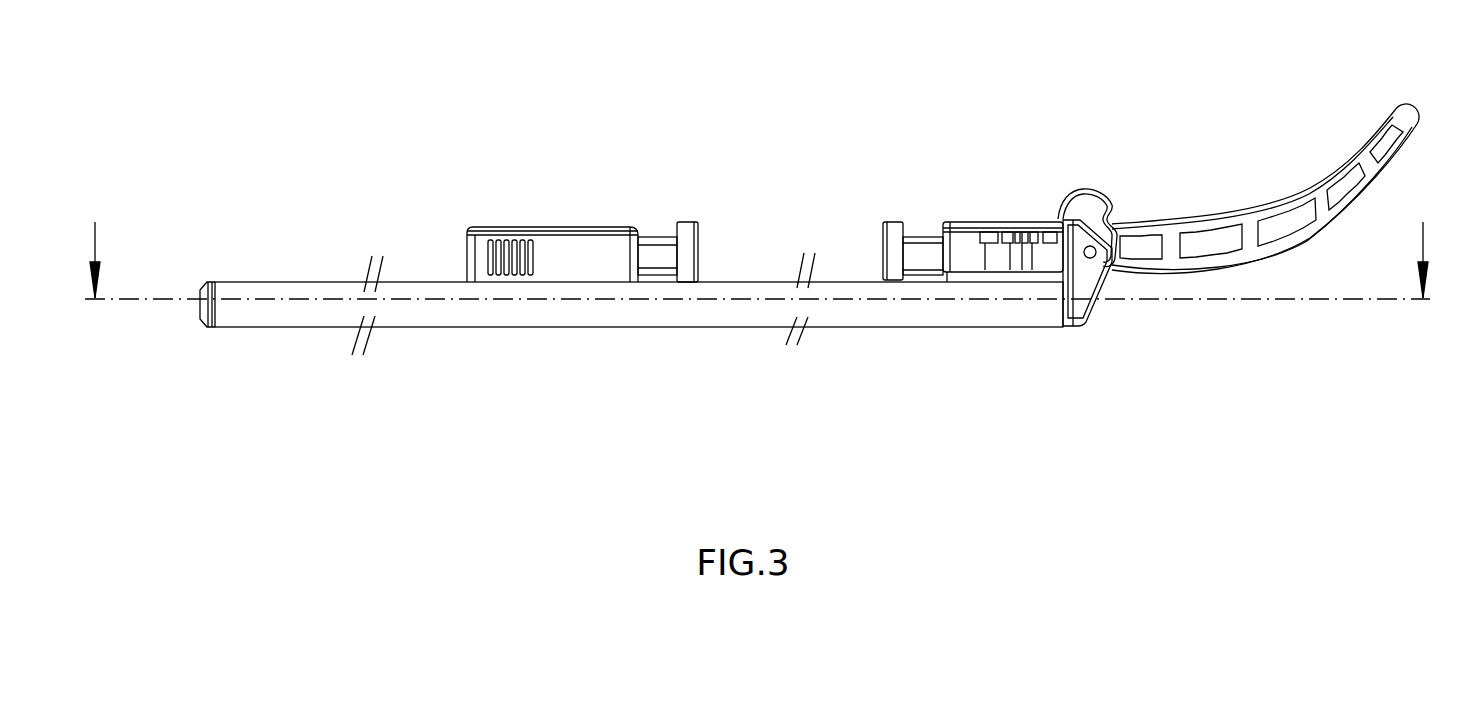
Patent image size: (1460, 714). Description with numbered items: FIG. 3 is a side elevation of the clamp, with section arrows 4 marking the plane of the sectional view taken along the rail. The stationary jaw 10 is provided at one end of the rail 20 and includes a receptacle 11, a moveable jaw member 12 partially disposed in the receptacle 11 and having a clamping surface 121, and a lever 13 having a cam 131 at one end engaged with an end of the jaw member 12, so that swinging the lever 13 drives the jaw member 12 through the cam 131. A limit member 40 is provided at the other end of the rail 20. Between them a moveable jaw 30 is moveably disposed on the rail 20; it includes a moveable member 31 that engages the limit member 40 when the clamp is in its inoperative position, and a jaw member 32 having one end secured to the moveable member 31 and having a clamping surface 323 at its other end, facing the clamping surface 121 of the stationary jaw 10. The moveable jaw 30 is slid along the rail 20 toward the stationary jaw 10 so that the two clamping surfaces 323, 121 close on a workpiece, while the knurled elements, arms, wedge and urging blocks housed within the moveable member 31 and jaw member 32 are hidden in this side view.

The section line 4- 4 is at (758, 255).
The stationary jaw 10 is at (1108, 233).
The receptacle 11 is at (979, 232).
The moveable jaw member 12 is at (932, 240).
The clamping surface 121 is at (889, 232).
The lever 13 is at (1258, 222).
The cam 131 is at (1103, 200).
The rail 20 is at (672, 318).
The moveable jaw 30 is at (618, 270).
The moveable member 31 is at (581, 240).
The jaw member 32 is at (661, 250).
The clamping surface 323 is at (691, 237).
The limit member 40 is at (200, 320).